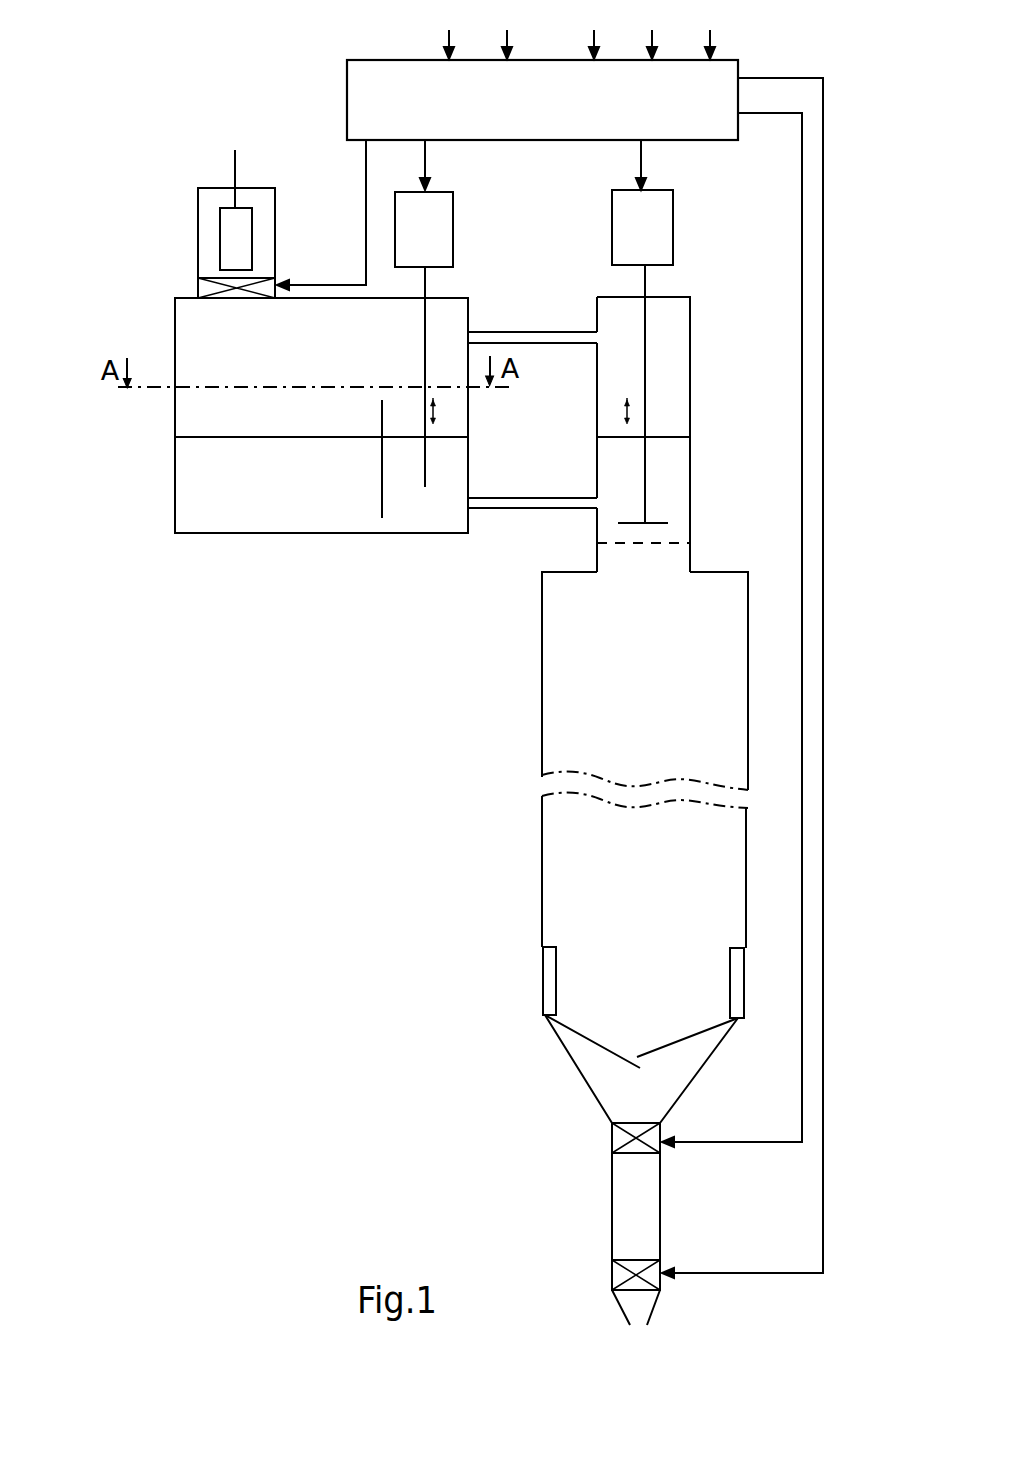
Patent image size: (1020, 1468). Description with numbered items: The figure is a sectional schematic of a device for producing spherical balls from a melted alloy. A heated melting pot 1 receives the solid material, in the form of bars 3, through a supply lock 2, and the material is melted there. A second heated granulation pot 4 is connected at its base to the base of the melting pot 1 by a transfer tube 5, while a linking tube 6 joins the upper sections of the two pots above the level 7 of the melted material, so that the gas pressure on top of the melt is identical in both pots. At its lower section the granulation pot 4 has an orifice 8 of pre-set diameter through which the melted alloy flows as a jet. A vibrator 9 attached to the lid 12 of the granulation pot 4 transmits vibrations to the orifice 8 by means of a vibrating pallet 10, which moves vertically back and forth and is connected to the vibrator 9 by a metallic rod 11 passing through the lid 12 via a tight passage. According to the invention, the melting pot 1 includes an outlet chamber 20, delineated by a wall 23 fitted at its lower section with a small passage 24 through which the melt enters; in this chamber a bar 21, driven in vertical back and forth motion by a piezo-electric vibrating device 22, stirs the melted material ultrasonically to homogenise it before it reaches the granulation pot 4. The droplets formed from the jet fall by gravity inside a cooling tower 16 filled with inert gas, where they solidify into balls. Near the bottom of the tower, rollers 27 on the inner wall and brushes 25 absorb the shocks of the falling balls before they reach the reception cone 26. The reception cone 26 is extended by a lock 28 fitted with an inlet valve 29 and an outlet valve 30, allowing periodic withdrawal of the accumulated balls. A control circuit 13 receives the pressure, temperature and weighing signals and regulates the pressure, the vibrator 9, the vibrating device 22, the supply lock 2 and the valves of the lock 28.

The melting pot 1 is at (188, 333).
The supply lock 2 is at (266, 243).
The bars 3 is at (245, 218).
The granulation pot 4 is at (672, 388).
The transfer tube 5 is at (522, 507).
The linking tube 6 is at (555, 337).
The level 7 is at (195, 437).
The orifice 8 is at (645, 548).
The vibrator 9 is at (660, 240).
The vibrating pallet 10 is at (660, 518).
The metallic rod 11 is at (646, 344).
The lid 12 is at (672, 294).
The control circuit 13 is at (705, 120).
The cooling tower 16 is at (732, 660).
The outlet chamber 20 is at (462, 458).
The bar 21 is at (430, 322).
The vibrating device 22 is at (432, 240).
The wall 23 is at (379, 472).
The passage 24 is at (387, 512).
The brushes 25 is at (595, 1046).
The reception cone 26 is at (703, 1072).
The rollers 27 is at (548, 975).
The lock 28 is at (622, 1214).
The inlet valve 29 is at (608, 1133).
The outlet valve 30 is at (610, 1268).